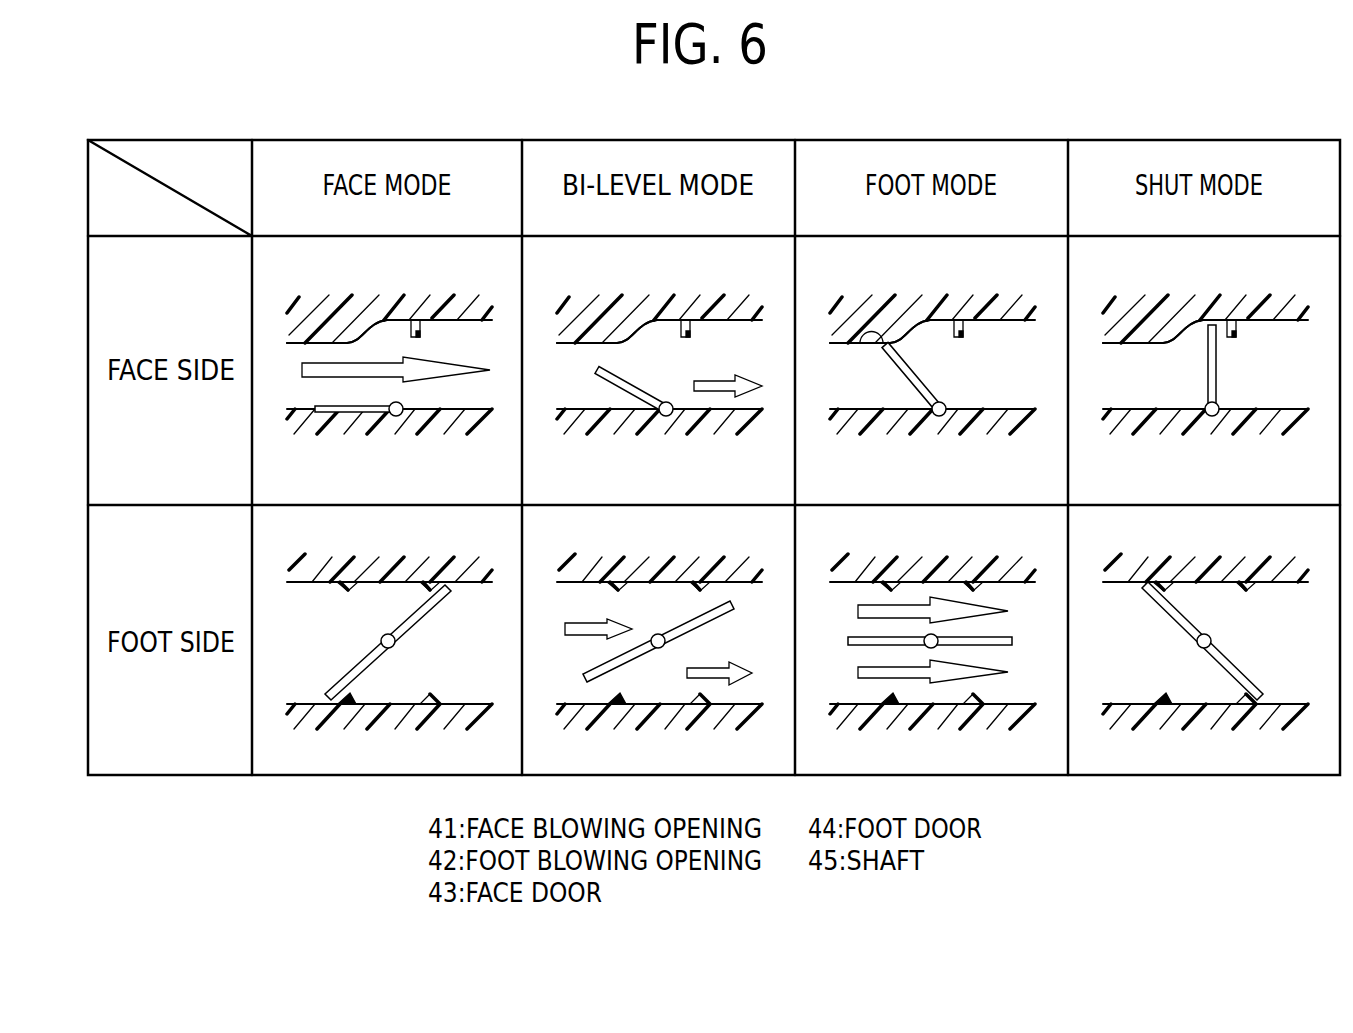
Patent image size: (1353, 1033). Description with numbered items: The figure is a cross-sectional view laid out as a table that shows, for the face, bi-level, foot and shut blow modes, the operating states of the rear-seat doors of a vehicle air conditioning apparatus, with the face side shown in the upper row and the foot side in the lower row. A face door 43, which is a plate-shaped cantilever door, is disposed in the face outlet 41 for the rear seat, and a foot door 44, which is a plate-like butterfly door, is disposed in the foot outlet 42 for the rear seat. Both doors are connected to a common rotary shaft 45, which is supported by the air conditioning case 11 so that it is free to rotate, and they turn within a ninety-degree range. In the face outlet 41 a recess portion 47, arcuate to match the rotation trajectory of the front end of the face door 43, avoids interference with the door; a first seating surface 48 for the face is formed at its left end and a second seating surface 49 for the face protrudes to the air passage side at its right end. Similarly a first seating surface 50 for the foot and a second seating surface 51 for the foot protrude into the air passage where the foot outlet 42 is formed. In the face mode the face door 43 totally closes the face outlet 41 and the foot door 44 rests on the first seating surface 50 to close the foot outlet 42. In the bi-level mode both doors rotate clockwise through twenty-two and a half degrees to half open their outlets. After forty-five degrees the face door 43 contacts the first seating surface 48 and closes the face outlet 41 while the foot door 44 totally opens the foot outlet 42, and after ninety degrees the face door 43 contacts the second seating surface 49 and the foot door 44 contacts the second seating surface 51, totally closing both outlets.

The air conditioning case 11 is at (389, 303).
The face outlet 41 is at (452, 400).
The foot outlet 42 is at (475, 687).
The face door 43 is at (322, 413).
The foot door 44 is at (365, 665).
The rotary shaft 45 is at (397, 417).
The recess portion 47 is at (357, 326).
The first seating surface for the face 48 is at (349, 343).
The second seating surface for the face 49 is at (421, 327).
The first seating surface for the foot 50 is at (435, 578).
The second seating surface for the foot 51 is at (337, 583).